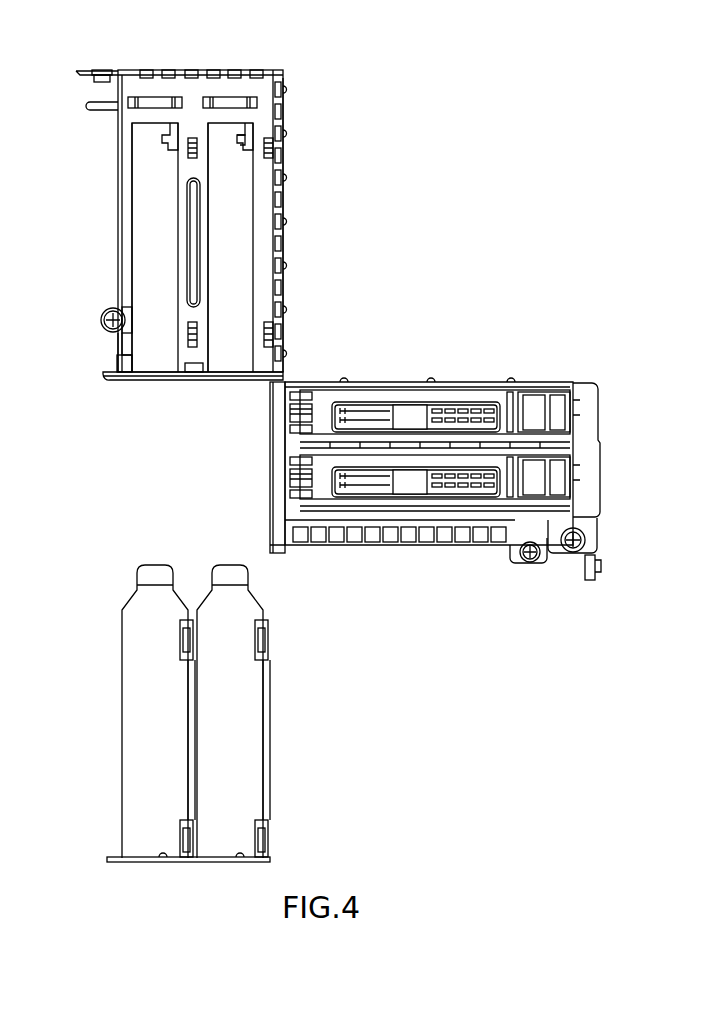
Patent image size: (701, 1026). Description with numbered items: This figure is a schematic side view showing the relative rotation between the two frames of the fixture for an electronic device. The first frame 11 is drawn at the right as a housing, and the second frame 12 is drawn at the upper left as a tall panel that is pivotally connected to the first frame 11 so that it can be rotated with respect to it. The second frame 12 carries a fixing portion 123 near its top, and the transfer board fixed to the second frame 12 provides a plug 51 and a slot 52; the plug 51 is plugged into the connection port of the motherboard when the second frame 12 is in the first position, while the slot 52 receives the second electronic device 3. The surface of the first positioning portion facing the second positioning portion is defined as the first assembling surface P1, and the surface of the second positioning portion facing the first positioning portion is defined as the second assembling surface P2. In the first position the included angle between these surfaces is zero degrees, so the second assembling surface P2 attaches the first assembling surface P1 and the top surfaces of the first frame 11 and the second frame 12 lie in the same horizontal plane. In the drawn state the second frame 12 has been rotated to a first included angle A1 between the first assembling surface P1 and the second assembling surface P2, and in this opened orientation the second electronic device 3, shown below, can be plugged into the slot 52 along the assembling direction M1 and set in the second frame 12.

The first frame 11 is at (483, 364).
The second frame 12 is at (300, 207).
The fixing portion 123 is at (88, 72).
The plug 51 is at (100, 110).
The slot 52 is at (243, 140).
The second electronic device 3 is at (130, 724).
The first assembling surface P1 is at (270, 515).
The second assembling surface P2 is at (132, 380).
The first included angle A1 is at (255, 444).
The assembling direction M1 is at (155, 458).